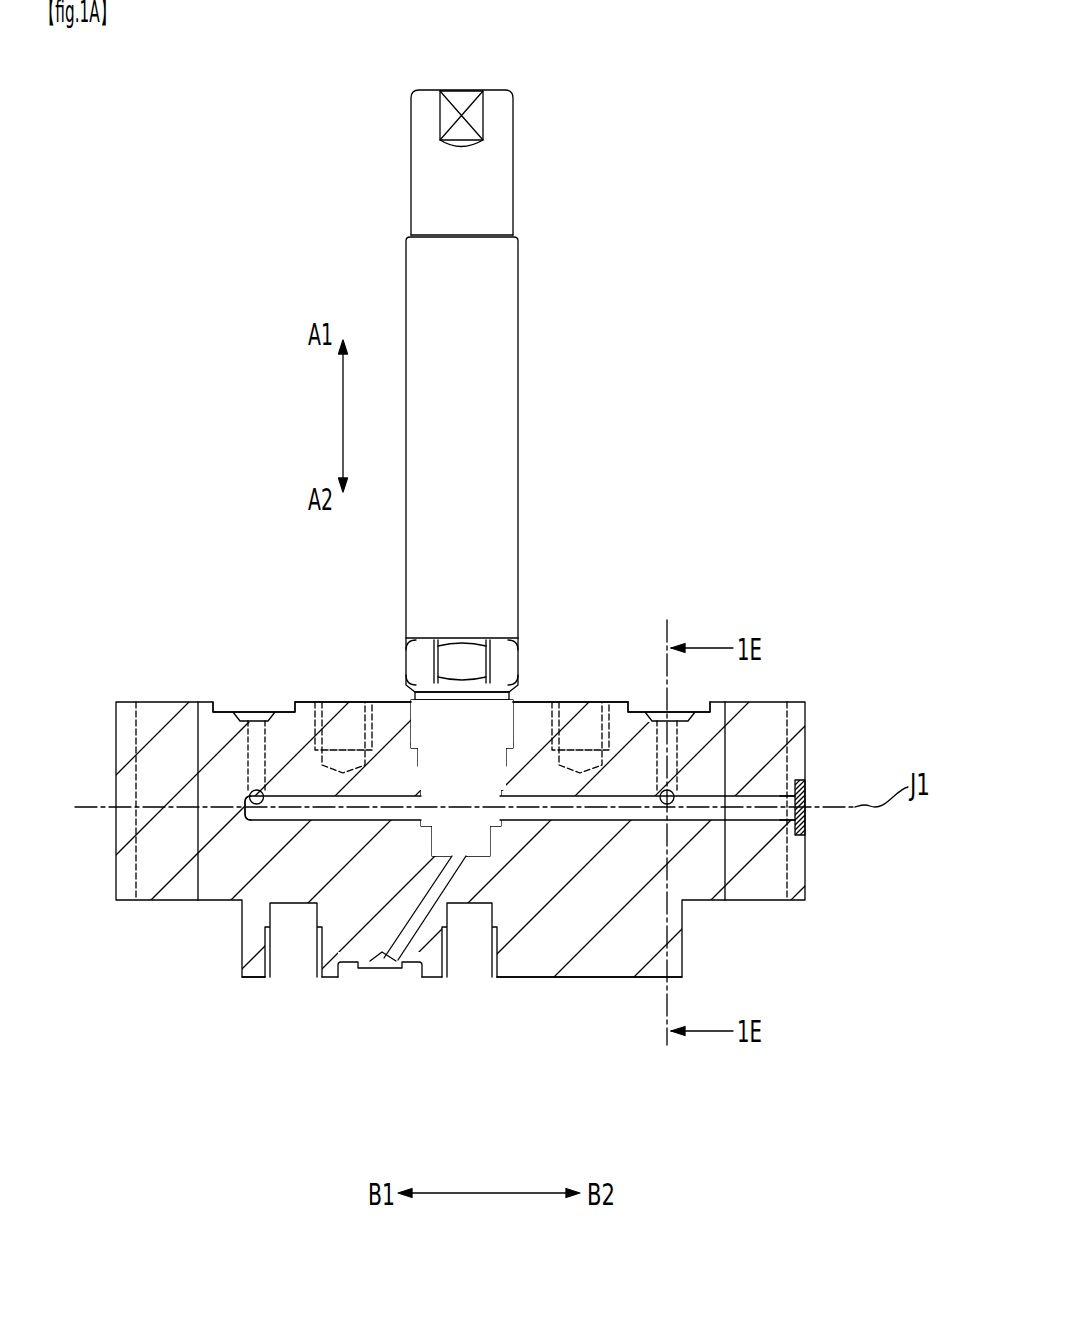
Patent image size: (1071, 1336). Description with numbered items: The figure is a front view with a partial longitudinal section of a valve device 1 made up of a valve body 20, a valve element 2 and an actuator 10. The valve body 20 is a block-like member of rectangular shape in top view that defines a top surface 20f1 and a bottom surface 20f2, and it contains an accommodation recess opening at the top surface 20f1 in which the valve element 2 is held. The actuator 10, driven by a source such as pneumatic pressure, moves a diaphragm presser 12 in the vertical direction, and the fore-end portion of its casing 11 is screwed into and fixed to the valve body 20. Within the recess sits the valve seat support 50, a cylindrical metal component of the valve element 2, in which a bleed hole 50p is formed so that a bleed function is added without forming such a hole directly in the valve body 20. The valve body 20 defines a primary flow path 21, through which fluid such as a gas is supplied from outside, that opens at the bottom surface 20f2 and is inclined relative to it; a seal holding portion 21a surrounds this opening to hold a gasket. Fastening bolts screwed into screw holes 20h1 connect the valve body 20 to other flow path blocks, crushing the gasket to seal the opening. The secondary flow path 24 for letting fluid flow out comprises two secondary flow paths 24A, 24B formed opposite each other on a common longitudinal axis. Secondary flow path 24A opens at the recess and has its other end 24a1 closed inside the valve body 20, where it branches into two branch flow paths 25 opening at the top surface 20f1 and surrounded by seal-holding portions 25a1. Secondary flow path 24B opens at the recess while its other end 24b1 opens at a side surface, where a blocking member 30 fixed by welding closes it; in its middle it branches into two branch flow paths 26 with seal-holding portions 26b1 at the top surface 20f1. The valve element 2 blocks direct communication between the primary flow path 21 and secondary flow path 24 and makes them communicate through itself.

The valve device 1 is at (603, 148).
The actuator 10 is at (527, 332).
The casing 11 is at (432, 725).
The diaphragm presser 12 is at (462, 765).
The valve element 2 is at (453, 775).
The valve seat support 50 is at (510, 700).
The bleed hole 50p is at (505, 795).
The valve body 20 is at (534, 851).
The top surface 20f1 is at (522, 702).
The bottom surface 20f2 is at (575, 977).
The screw holes 20h1 is at (300, 947).
The secondary flow path 24 is at (525, 782).
The secondary flow path 24A is at (326, 810).
The secondary flow path 24B is at (592, 812).
The other end 24a1 is at (246, 812).
The other end 24b1 is at (788, 826).
The branch flow path 25 is at (248, 798).
The seal-holding portion 25a1 is at (255, 708).
The branch flow path 26 is at (677, 747).
The seal-holding portion 26b1 is at (700, 703).
The blocking member 30 is at (808, 805).
The primary flow path 21 is at (405, 897).
The seal holding portion 21a is at (381, 975).